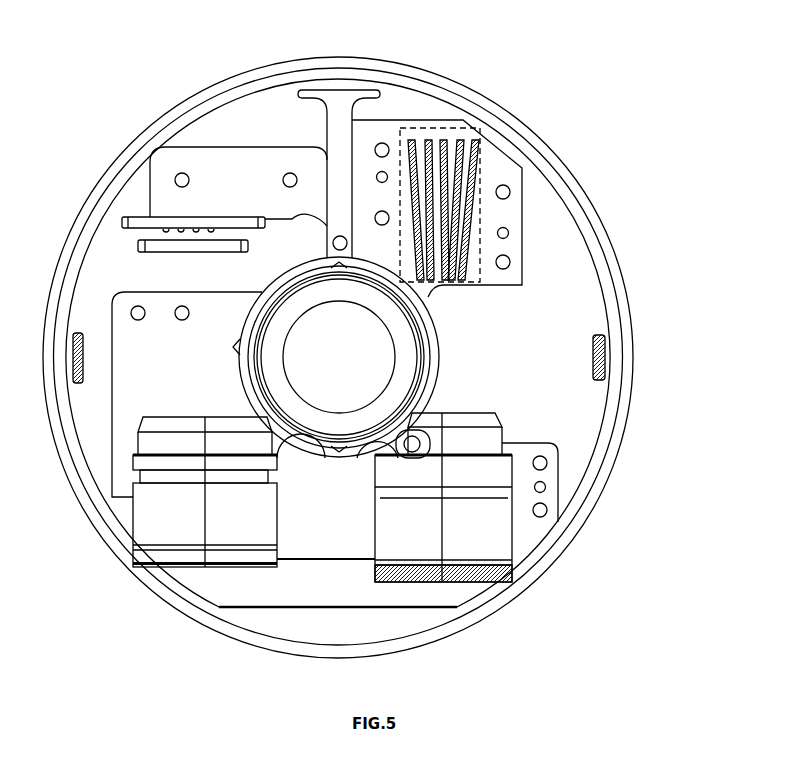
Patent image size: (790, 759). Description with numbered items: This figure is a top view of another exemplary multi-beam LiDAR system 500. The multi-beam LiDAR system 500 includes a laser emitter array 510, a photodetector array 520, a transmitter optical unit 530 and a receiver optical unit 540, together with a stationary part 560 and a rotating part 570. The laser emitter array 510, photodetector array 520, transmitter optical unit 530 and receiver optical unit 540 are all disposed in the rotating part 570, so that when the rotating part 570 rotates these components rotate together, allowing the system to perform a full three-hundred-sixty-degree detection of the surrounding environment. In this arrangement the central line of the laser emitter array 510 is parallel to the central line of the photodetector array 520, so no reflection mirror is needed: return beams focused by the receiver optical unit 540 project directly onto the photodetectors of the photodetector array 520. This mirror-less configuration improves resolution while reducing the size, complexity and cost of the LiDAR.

The multi-beam LiDAR system 500 is at (363, 30).
The laser emitter array 510 is at (480, 207).
The photodetector array 520 is at (187, 215).
The transmitter optical unit 530 is at (487, 530).
The receiver optical unit 540 is at (175, 507).
The stationary part 560 is at (353, 338).
The rotating part 570 is at (548, 298).